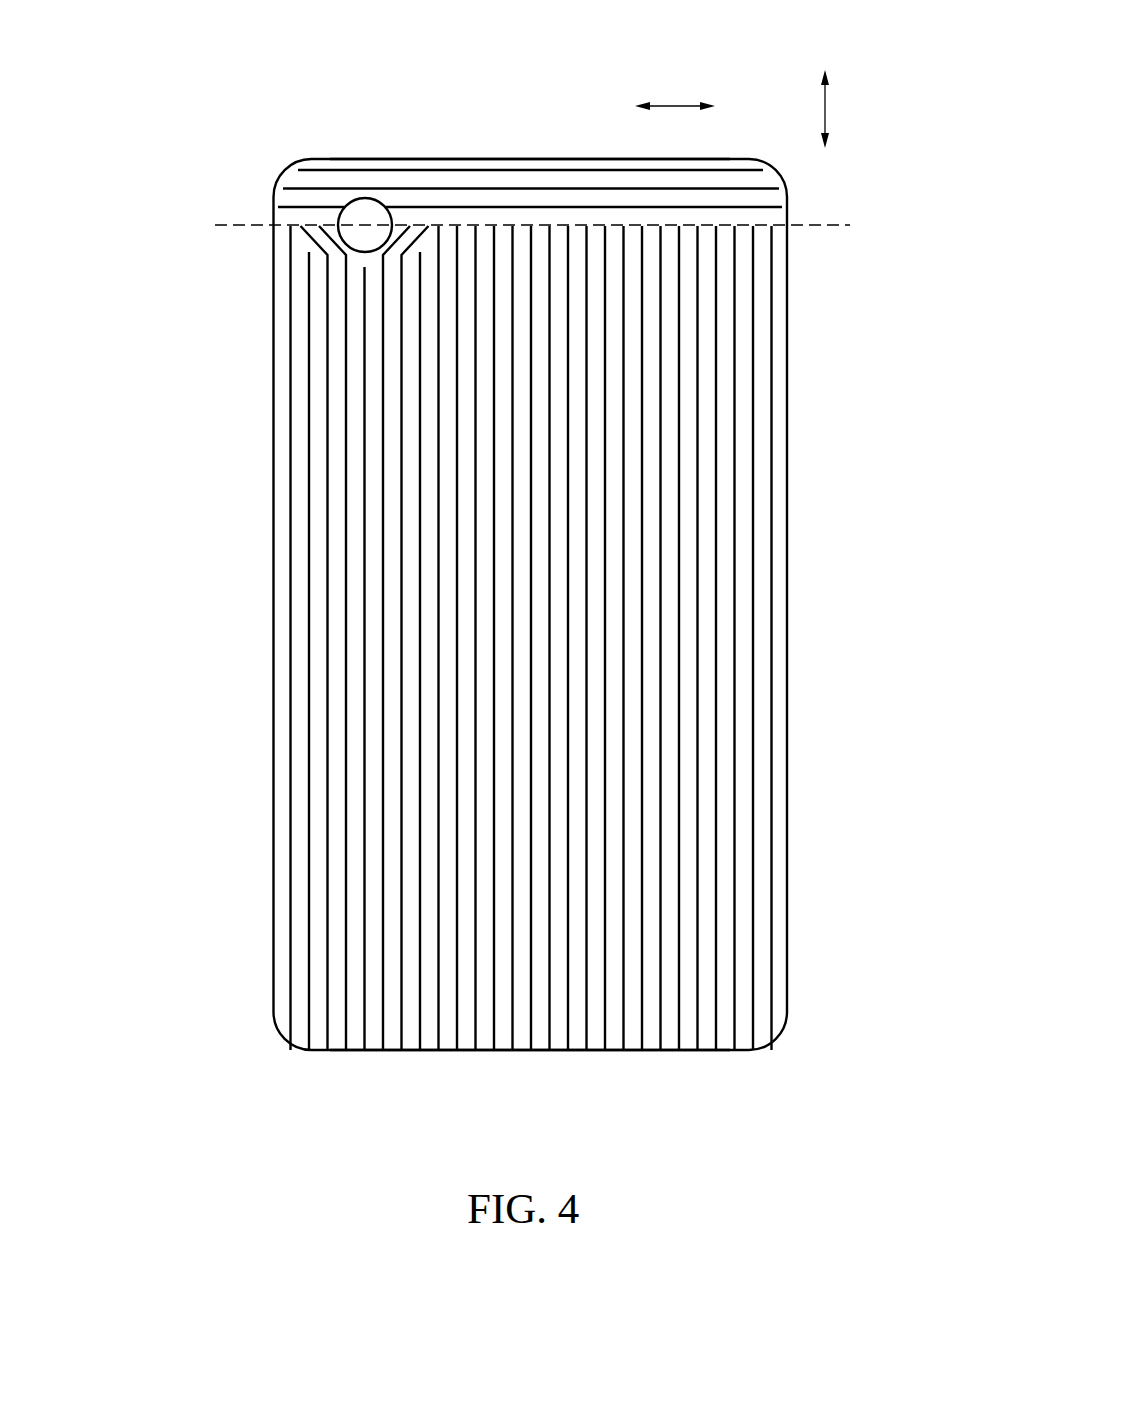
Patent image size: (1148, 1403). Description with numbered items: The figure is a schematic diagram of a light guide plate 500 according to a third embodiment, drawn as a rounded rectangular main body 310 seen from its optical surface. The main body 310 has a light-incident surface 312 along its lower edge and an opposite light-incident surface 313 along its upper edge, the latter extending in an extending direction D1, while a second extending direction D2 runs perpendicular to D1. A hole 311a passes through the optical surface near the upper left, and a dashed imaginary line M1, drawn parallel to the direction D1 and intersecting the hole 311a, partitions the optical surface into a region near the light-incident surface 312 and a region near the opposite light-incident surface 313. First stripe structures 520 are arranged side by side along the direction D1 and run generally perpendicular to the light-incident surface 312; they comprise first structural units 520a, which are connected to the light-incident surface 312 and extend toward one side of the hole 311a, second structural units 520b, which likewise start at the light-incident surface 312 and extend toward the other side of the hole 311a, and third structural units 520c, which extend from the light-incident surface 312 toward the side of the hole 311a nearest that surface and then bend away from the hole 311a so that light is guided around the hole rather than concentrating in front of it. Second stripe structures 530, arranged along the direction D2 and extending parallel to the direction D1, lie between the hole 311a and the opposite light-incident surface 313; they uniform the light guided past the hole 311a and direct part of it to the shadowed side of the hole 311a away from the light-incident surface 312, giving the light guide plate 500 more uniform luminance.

The light guide plate 500 is at (160, 40).
The main body 310 is at (254, 688).
The hole 311a is at (352, 215).
The light-incident surface 312 is at (725, 1050).
The opposite light-incident surface 313 is at (518, 159).
The second stripe structures 530 is at (387, 170).
The first stripe structures 520 is at (477, 664).
The first structural units 520a is at (310, 1053).
The second structural units 520b is at (771, 1053).
The third structural units 520c is at (402, 1053).
The imaginary line M1 is at (808, 223).
The extending direction of the opposite light-incident surface D1 is at (675, 89).
The extending direction D2 is at (846, 109).